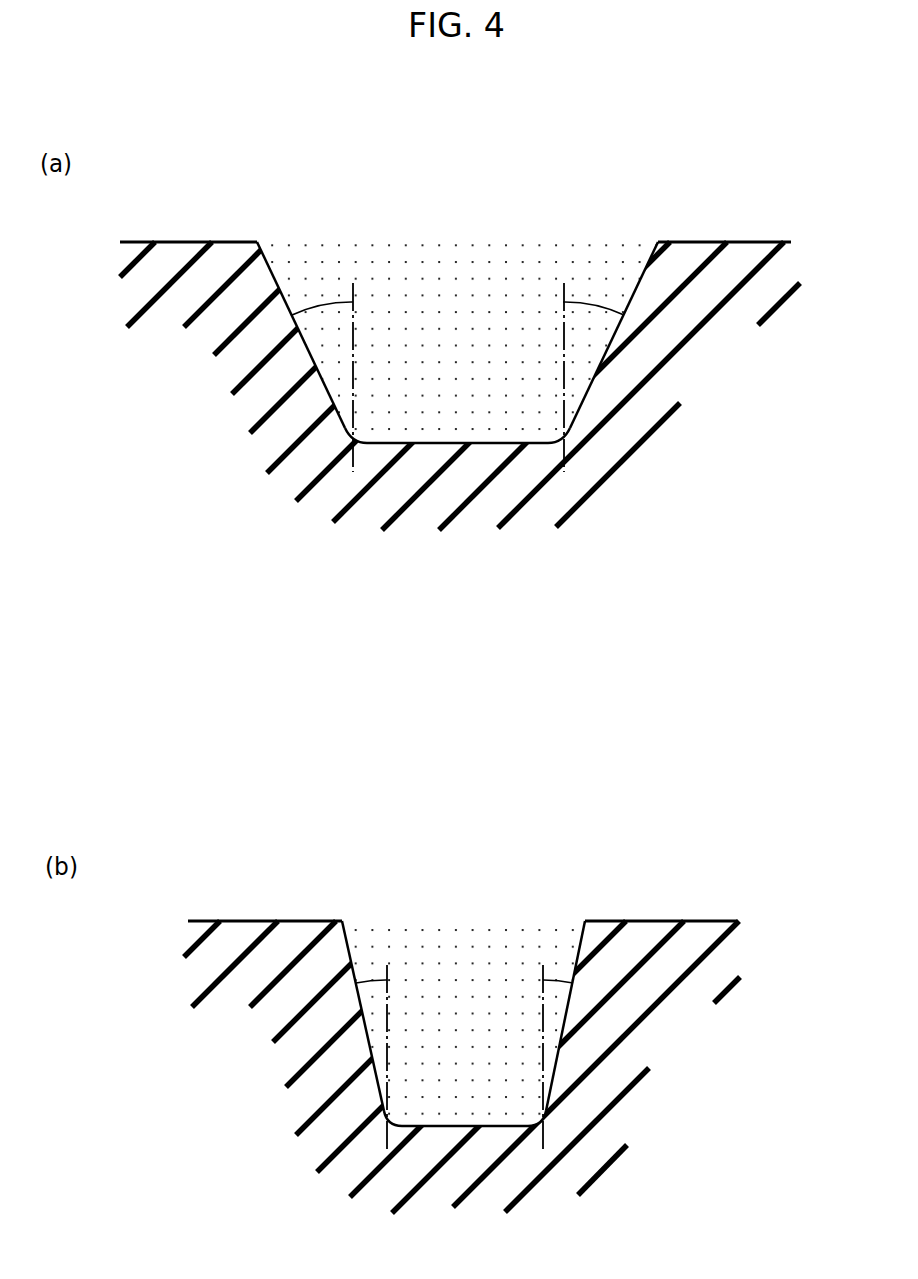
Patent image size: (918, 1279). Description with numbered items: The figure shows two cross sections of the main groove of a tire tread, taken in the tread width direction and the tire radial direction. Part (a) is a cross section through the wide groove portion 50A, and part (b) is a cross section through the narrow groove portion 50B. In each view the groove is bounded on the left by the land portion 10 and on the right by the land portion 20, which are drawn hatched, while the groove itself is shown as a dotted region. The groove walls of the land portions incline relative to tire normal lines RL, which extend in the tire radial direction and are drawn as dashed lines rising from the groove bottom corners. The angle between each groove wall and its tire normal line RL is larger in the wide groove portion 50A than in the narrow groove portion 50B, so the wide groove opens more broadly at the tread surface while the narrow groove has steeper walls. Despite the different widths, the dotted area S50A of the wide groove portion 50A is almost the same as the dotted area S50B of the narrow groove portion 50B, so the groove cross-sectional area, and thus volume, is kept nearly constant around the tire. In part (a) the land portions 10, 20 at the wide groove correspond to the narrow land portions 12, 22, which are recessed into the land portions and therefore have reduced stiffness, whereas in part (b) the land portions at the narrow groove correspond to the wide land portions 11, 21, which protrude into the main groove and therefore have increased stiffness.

The land portion 10 is at (362, 680).
The wide land portion 11 is at (250, 932).
The narrow land portion 12 is at (173, 254).
The land portion 20 is at (575, 700).
The wide land portion 21 is at (677, 920).
The narrow land portion 22 is at (742, 253).
The wide groove portion 50A is at (458, 187).
The narrow groove portion 50B is at (463, 879).
The area of the wide groove portion S50A is at (456, 336).
The area of the narrow groove portion S50B is at (465, 1022).
The tire normal line RL is at (352, 463).